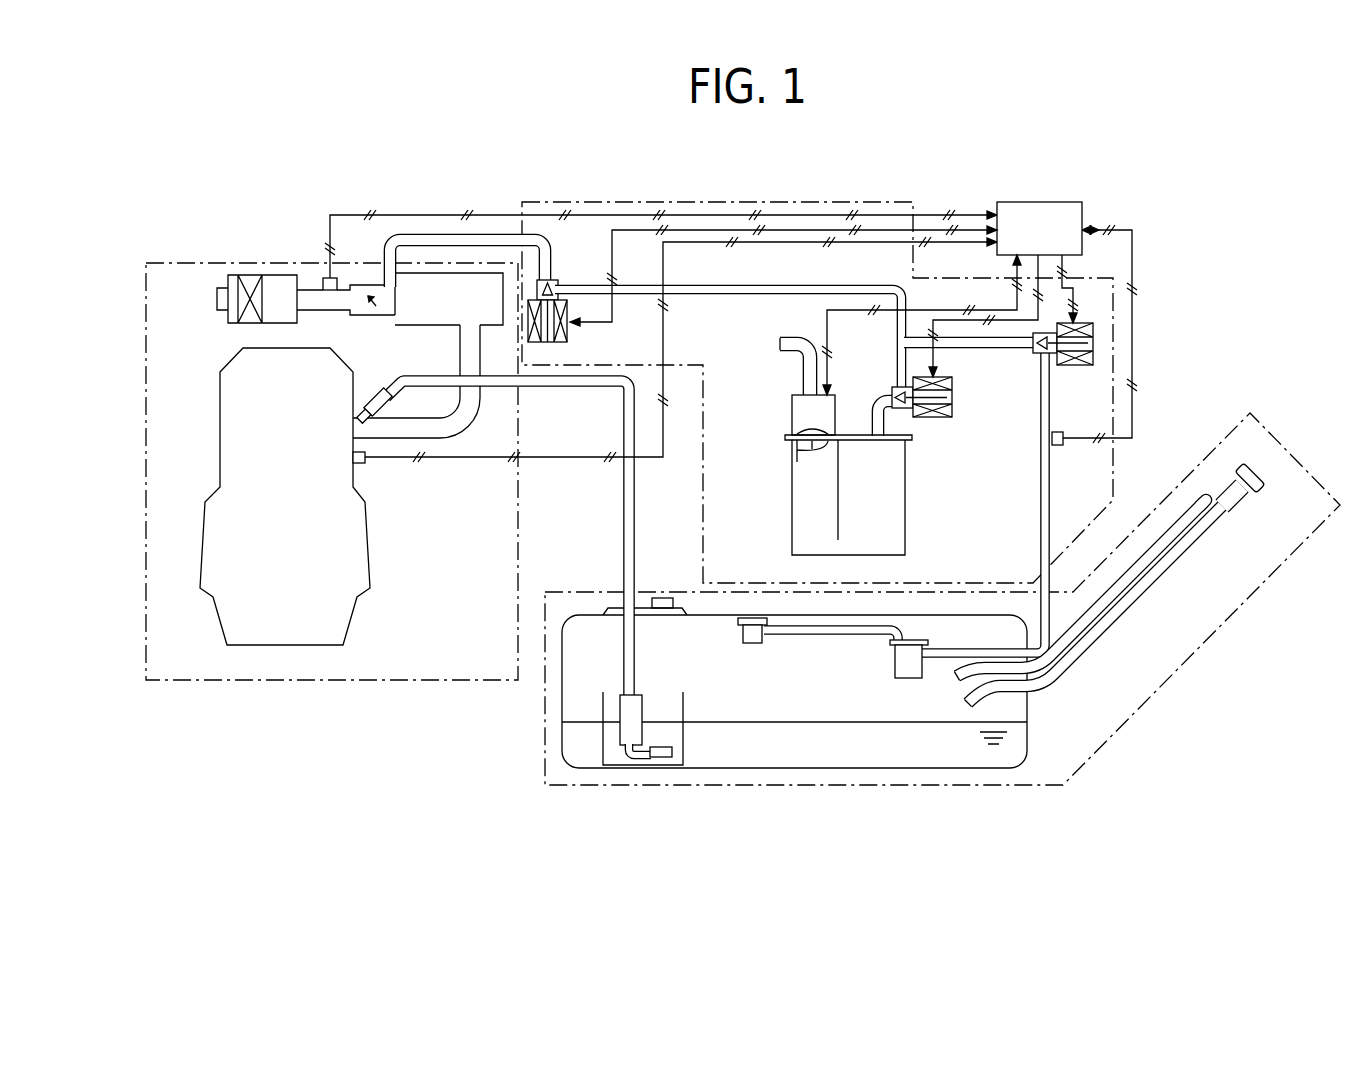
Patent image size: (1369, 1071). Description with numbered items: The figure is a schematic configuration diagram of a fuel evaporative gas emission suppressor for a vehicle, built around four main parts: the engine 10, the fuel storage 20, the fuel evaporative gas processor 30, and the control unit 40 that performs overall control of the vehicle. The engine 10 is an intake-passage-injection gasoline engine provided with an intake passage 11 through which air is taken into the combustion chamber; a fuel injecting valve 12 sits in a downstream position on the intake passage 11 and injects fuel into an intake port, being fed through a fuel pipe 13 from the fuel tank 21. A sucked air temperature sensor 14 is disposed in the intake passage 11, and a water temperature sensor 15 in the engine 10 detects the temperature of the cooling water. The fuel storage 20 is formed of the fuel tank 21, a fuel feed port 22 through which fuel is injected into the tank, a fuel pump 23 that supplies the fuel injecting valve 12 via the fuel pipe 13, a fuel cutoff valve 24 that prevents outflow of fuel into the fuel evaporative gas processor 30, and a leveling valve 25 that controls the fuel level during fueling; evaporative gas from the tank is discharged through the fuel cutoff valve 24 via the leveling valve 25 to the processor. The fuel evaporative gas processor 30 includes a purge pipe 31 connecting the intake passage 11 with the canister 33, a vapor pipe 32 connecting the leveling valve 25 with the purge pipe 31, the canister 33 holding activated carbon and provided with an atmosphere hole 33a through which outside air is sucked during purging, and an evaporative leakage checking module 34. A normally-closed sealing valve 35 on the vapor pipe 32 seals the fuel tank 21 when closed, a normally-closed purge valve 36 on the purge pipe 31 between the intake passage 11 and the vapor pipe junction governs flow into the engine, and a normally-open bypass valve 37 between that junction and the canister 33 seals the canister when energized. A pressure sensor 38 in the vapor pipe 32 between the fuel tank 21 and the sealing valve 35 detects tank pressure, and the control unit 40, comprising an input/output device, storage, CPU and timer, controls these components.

The engine 10 is at (345, 683).
The intake passage 11 is at (302, 288).
The fuel injecting valve 12 is at (369, 395).
The fuel pipe 13 is at (566, 390).
The sucked air temperature sensor 14 is at (340, 286).
The water temperature sensor 15 is at (366, 462).
The fuel storage 20 is at (780, 790).
The fuel tank 21 is at (865, 770).
The fuel feed port 22 is at (1258, 488).
The fuel pump 23 is at (640, 693).
The fuel cutoff valve 24 is at (752, 646).
The leveling valve 25 is at (893, 668).
The fuel evaporative gas processor 30 is at (1115, 468).
The purge pipe 31 is at (718, 296).
The vapor pipe 32 is at (1041, 520).
The canister 33 is at (905, 470).
The atmosphere hole 33a is at (795, 442).
The evaporative leakage checking module 34 is at (790, 405).
The sealing valve 35 is at (1078, 368).
The purge valve 36 is at (568, 333).
The bypass valve 37 is at (953, 406).
The pressure sensor 38 is at (1060, 447).
The control unit 40 is at (1083, 208).